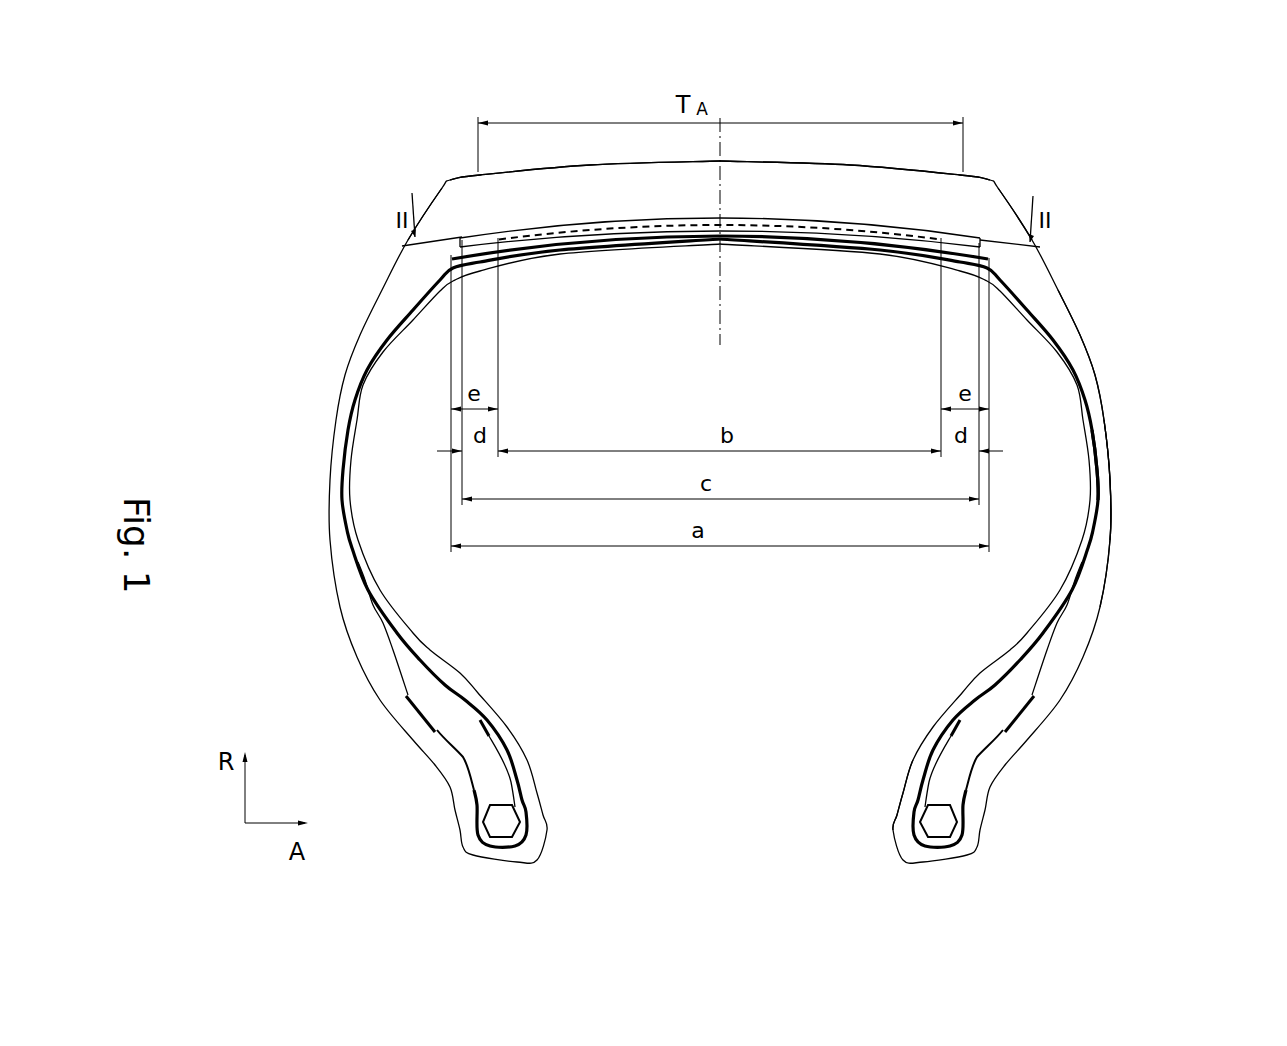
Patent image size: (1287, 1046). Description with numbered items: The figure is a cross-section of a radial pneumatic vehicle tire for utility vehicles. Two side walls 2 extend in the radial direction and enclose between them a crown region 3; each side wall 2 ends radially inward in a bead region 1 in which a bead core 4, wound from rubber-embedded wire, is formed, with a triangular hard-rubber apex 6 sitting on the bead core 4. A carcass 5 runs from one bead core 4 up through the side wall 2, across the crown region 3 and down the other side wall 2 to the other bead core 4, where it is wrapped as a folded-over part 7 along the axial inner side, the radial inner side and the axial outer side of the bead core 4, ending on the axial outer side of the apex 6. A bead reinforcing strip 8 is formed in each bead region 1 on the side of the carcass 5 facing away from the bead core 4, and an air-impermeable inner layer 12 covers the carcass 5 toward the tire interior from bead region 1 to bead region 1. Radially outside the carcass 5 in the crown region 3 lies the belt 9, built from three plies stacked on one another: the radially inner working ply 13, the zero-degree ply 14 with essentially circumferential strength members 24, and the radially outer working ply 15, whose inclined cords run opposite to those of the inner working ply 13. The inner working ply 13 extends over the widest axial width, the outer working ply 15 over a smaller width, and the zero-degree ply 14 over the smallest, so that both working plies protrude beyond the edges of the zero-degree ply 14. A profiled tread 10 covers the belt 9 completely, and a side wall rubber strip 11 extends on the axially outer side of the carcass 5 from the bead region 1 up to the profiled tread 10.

The bead region 1 is at (985, 815).
The side wall 2 is at (1111, 532).
The crown region 3 is at (773, 161).
The bead core 4 is at (940, 823).
The carcass 5 is at (1088, 578).
The apex 6 is at (1021, 683).
The folded-over part 7 is at (1012, 727).
The bead reinforcing strip 8 is at (919, 785).
The belt 9 is at (938, 229).
The profiled tread 10 is at (830, 200).
The side wall rubber strip 11 is at (1107, 453).
The inner layer 12 is at (1094, 448).
The radially inner belt ply 13 is at (940, 241).
The third belt ply 14 is at (860, 238).
The radially outer belt ply 15 is at (1023, 167).
The strength members 24 is at (815, 238).